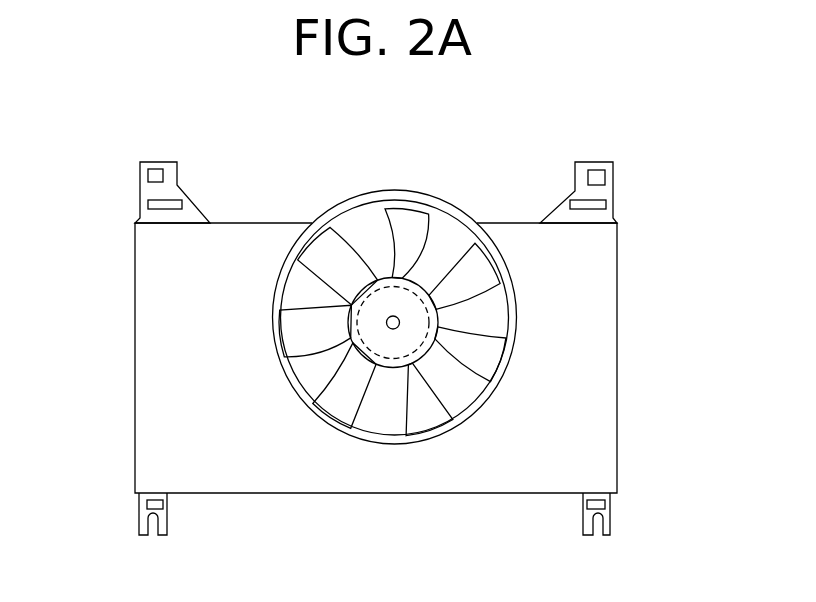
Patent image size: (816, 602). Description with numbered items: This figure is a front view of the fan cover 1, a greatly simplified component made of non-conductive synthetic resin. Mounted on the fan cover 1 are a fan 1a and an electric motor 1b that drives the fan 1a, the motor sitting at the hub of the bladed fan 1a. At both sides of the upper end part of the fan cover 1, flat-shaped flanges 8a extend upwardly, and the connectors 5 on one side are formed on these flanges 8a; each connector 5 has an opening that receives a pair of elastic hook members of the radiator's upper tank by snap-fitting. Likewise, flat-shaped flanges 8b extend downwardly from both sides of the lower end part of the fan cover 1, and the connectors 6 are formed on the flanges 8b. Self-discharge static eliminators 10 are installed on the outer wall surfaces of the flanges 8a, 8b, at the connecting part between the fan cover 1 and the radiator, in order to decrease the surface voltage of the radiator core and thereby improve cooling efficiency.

The fan cover 1 is at (626, 265).
The fan 1a is at (477, 296).
The electric motor 1b is at (432, 323).
The connector 5 is at (381, 168).
The connector 6 is at (378, 545).
The flange 8a is at (140, 193).
The flange 8b is at (139, 515).
The self-discharge static eliminator 10 is at (163, 203).